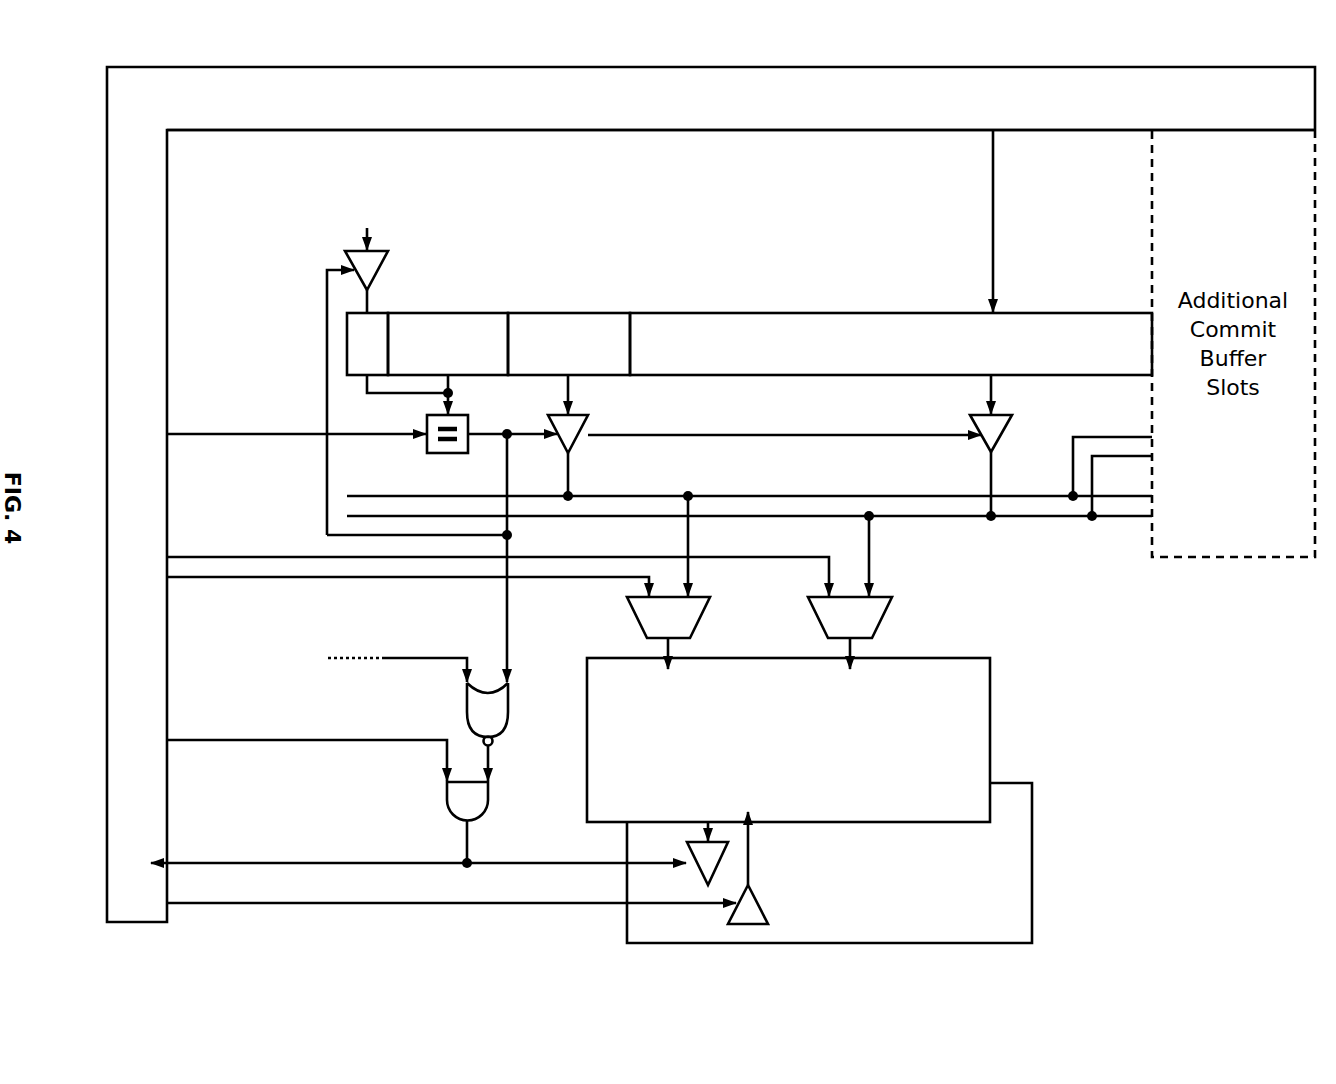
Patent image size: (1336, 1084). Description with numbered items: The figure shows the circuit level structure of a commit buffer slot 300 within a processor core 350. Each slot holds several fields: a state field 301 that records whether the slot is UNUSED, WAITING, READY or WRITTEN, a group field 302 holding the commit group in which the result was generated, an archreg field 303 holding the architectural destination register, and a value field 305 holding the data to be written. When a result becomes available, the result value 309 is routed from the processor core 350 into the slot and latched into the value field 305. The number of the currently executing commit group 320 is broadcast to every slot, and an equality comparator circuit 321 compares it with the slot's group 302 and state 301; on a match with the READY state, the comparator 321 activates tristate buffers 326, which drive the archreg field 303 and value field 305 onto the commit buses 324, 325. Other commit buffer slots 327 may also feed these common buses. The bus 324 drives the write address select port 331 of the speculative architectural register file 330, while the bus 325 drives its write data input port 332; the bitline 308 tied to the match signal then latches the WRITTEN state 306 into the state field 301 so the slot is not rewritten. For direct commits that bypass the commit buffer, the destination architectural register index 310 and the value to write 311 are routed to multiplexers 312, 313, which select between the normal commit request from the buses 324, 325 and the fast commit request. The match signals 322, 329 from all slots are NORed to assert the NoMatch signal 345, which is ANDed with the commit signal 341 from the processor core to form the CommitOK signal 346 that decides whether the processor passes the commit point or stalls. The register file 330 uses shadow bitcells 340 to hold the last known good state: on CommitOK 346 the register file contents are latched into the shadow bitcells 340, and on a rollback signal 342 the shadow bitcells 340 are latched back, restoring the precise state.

The commit buffer slot 300 is at (741, 152).
The state field 301 is at (397, 340).
The group field 302 is at (448, 351).
The archreg field 303 is at (569, 351).
The value field 305 is at (891, 363).
The WRITTEN state 306 is at (357, 371).
The bitline 308 is at (718, 534).
The result value 309 is at (1016, 221).
The destination architectural register index 310 is at (408, 589).
The value to write 311 is at (498, 564).
The multiplexer 312 is at (668, 633).
The multiplexer 313 is at (850, 633).
The currently executing commit group 320 is at (296, 417).
The equality comparator circuit 321 is at (448, 446).
The match signal 322 is at (654, 547).
The commit bus 324 is at (749, 534).
The commit bus 325 is at (749, 553).
The tristate buffers 326 is at (801, 455).
The other commit buffer slots 327 is at (1112, 464).
The match signal 329 is at (397, 671).
The speculative architectural register file 330 is at (788, 740).
The write address select port 331 is at (670, 697).
The write data input port 332 is at (857, 697).
The shadow bitcells 340 is at (829, 863).
The commit signal 341 is at (307, 749).
The rollback signal 342 is at (451, 892).
The NoMatch signal 345 is at (498, 732).
The CommitOK signal 346 is at (418, 825).
The processor core 350 is at (711, 494).